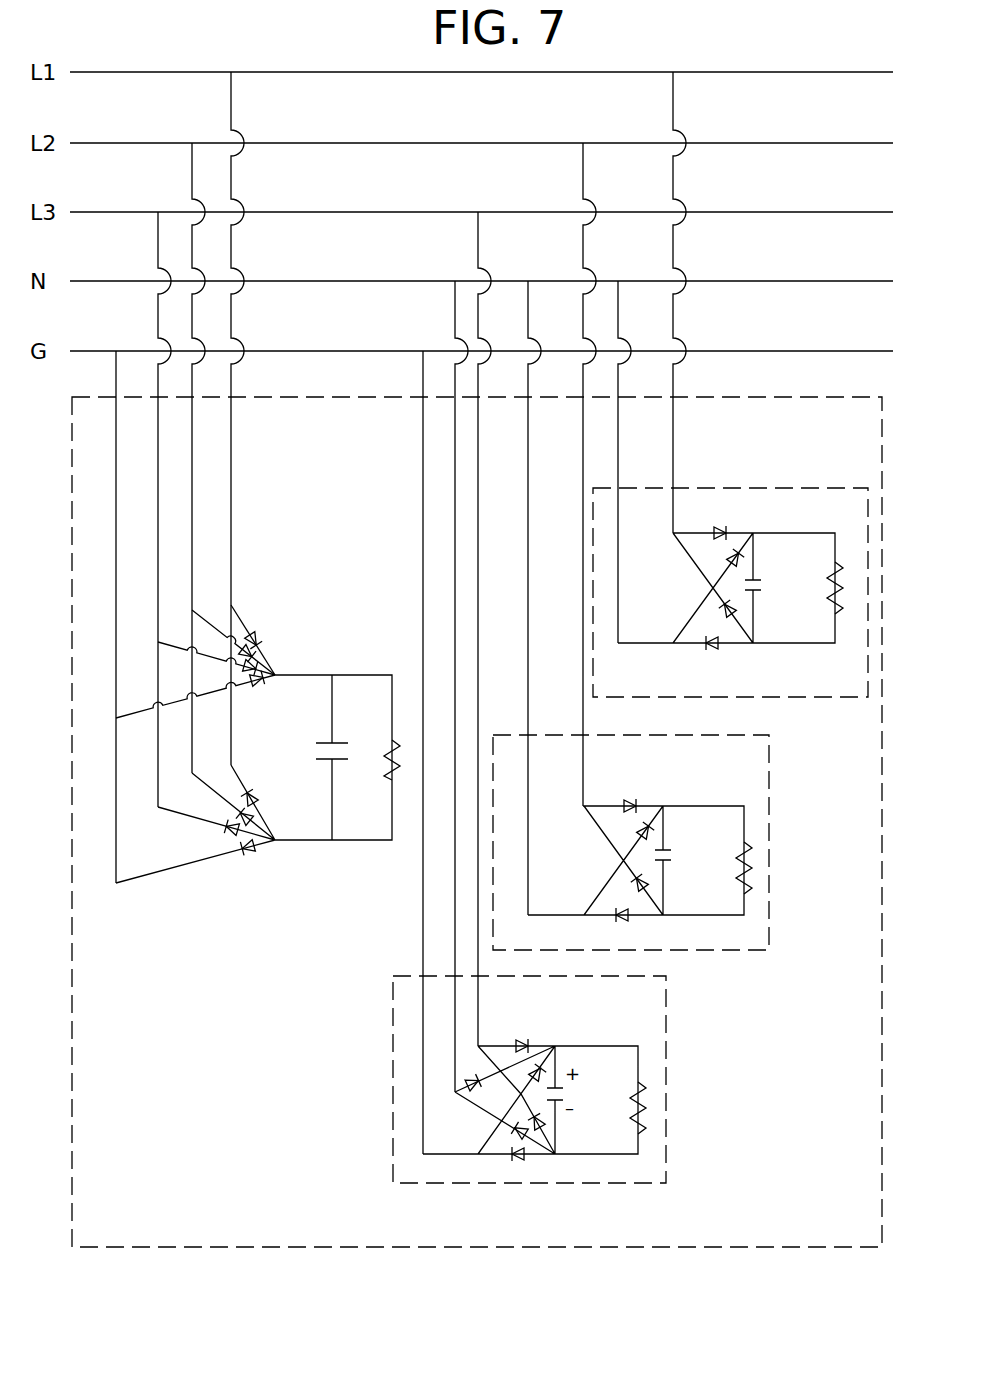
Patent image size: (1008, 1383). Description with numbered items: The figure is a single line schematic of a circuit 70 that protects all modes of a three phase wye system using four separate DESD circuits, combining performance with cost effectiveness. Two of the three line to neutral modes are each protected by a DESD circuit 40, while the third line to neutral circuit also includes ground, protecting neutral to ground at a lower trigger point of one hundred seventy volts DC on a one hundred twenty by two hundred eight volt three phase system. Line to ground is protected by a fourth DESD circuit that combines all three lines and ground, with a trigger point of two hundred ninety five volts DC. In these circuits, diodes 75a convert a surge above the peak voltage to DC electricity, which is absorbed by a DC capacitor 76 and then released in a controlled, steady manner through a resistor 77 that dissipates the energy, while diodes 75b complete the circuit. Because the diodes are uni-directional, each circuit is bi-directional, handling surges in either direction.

The circuit 70 is at (748, 1248).
The DESD circuit 40 is at (780, 488).
The diode 75a is at (257, 638).
The diode 75b is at (245, 854).
The DC capacitor 76 is at (565, 1060).
The resistor 77 is at (638, 1075).